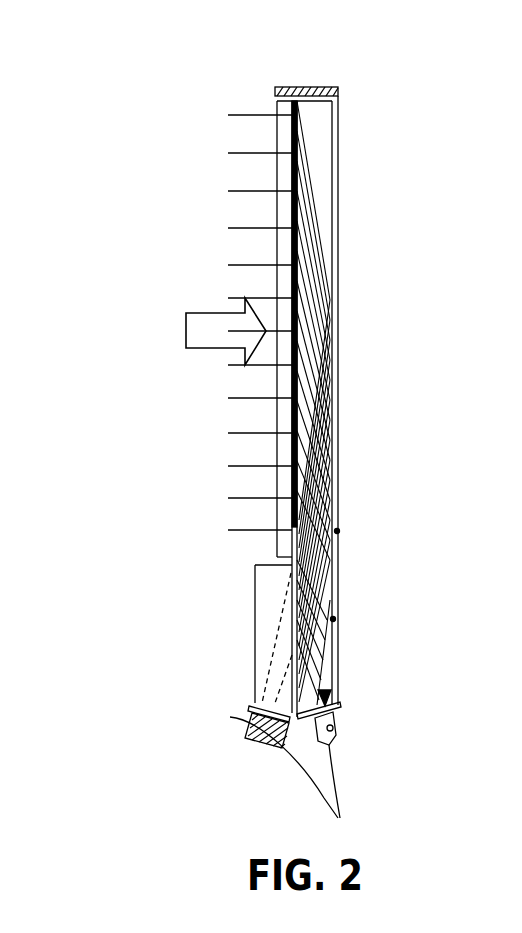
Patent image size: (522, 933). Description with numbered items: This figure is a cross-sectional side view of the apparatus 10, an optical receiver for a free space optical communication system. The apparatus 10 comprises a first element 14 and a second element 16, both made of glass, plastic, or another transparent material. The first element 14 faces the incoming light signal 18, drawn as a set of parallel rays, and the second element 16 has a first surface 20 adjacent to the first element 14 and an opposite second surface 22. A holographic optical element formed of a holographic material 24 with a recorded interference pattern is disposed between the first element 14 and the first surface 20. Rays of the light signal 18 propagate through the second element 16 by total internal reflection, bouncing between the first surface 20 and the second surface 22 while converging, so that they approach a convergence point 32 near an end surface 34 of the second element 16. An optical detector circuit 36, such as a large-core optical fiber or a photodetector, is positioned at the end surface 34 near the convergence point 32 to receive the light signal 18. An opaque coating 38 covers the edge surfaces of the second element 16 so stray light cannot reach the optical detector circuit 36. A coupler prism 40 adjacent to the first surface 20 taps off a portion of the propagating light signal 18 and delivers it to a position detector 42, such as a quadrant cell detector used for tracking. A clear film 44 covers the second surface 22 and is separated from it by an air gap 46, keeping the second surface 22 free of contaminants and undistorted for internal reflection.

The apparatus 10 is at (136, 180).
The first element 14 is at (282, 130).
The second element 16 is at (324, 136).
The light signal 18 is at (239, 322).
The first surface 20 is at (286, 562).
The second surface 22 is at (346, 253).
The holographic material 24 is at (296, 180).
The convergence point 32 is at (356, 696).
The end surface 34 is at (324, 698).
The optical detector circuit 36 is at (334, 728).
The coating 38 is at (306, 87).
The coupler prism 40 is at (264, 609).
The position detector 42 is at (248, 725).
The film 44 is at (338, 531).
The air gap 46 is at (334, 619).